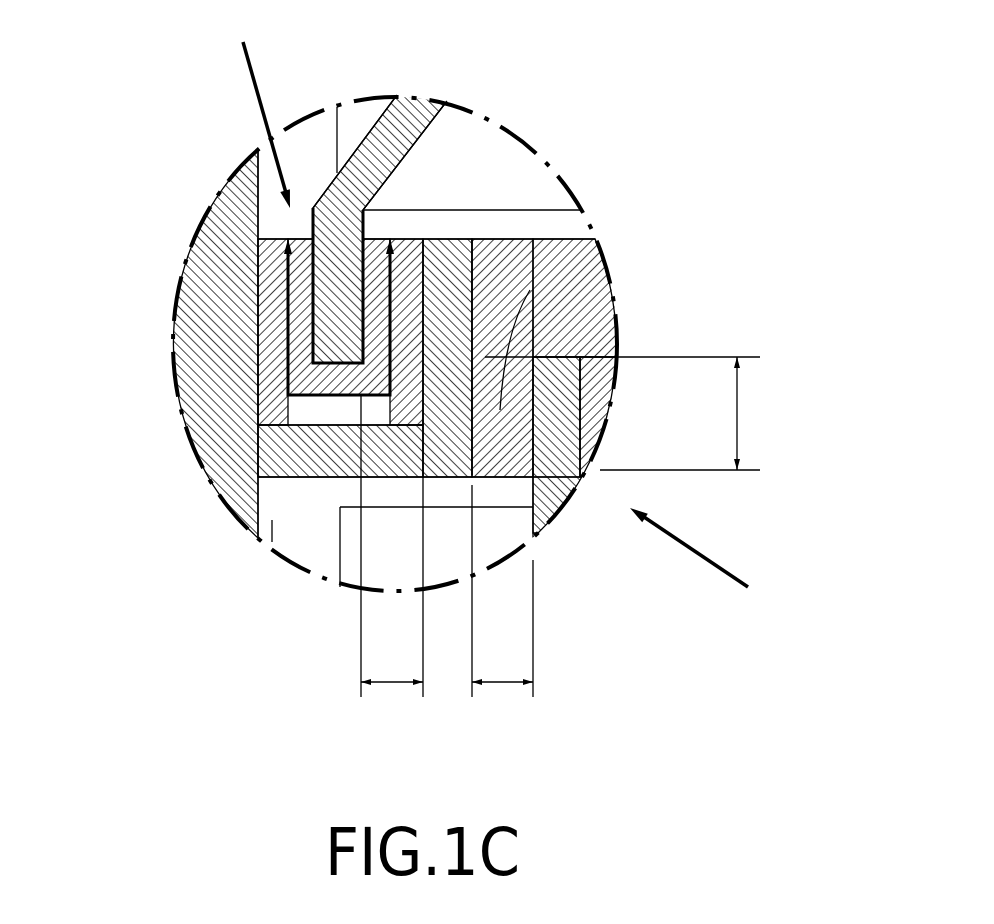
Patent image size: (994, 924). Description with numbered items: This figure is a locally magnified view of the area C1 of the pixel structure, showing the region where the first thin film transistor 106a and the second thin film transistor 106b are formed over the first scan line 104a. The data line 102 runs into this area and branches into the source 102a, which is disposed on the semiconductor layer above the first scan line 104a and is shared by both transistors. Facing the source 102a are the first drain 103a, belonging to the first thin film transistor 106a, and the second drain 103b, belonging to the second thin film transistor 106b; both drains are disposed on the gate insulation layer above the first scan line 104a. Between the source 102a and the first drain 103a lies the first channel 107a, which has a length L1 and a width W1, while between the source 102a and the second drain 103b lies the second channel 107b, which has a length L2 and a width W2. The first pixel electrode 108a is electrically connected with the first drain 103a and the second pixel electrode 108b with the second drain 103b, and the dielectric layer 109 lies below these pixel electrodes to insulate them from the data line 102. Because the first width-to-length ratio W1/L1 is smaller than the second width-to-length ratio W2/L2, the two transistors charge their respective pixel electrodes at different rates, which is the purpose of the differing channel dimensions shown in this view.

The data line 102 is at (200, 460).
The source 102a is at (313, 460).
The first drain 103a is at (570, 510).
The second drain 103b is at (405, 105).
The first scan line 104a is at (593, 302).
The first thin film transistor 106a is at (735, 561).
The second thin film transistor 106b is at (226, 106).
The first channel 107a is at (592, 237).
The second channel 107b is at (287, 395).
The first pixel electrode 108a is at (448, 558).
The second pixel electrode 108b is at (508, 165).
The dielectric layer 109 is at (272, 545).
The area C1 is at (223, 183).
The width W1 is at (622, 413).
The width W2 is at (287, 322).
The length L1 is at (502, 628).
The length L2 is at (392, 659).